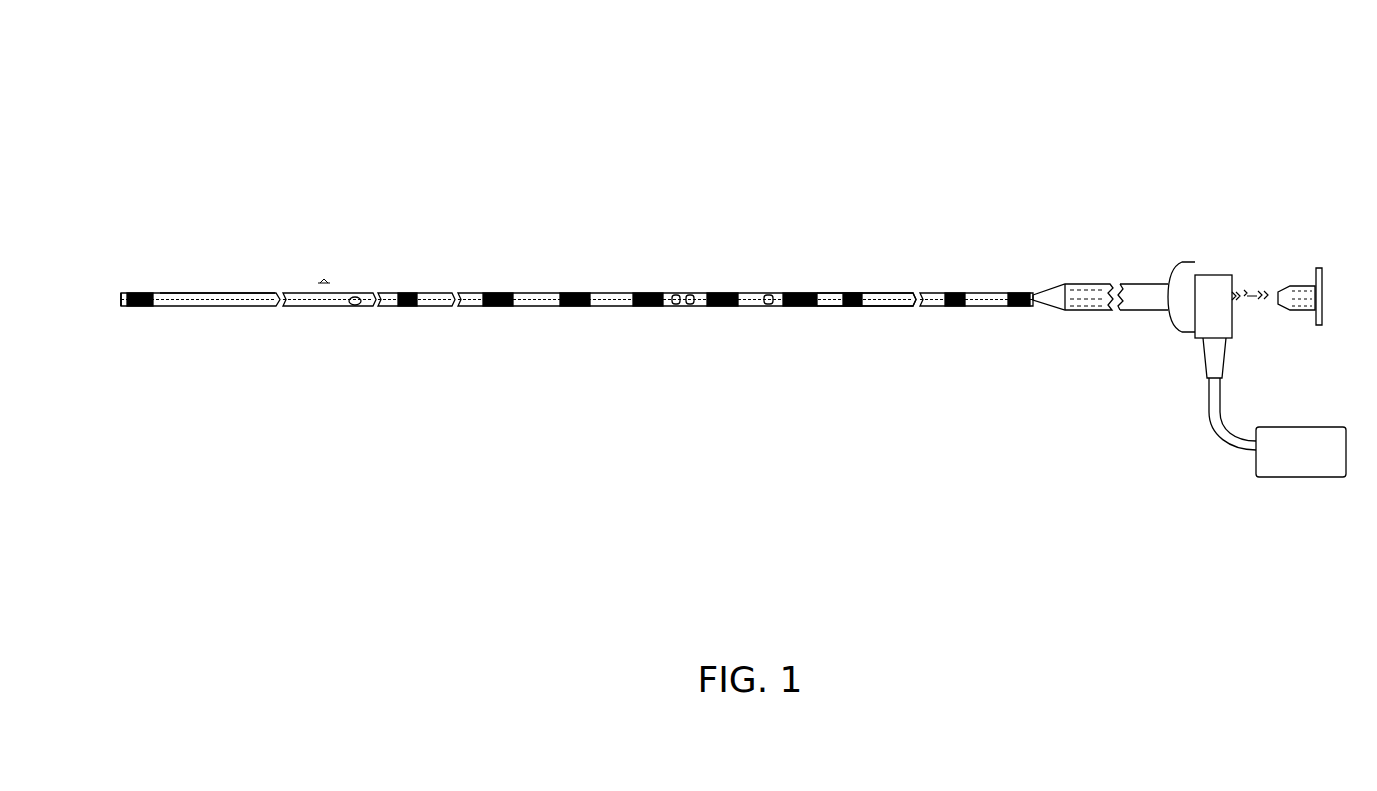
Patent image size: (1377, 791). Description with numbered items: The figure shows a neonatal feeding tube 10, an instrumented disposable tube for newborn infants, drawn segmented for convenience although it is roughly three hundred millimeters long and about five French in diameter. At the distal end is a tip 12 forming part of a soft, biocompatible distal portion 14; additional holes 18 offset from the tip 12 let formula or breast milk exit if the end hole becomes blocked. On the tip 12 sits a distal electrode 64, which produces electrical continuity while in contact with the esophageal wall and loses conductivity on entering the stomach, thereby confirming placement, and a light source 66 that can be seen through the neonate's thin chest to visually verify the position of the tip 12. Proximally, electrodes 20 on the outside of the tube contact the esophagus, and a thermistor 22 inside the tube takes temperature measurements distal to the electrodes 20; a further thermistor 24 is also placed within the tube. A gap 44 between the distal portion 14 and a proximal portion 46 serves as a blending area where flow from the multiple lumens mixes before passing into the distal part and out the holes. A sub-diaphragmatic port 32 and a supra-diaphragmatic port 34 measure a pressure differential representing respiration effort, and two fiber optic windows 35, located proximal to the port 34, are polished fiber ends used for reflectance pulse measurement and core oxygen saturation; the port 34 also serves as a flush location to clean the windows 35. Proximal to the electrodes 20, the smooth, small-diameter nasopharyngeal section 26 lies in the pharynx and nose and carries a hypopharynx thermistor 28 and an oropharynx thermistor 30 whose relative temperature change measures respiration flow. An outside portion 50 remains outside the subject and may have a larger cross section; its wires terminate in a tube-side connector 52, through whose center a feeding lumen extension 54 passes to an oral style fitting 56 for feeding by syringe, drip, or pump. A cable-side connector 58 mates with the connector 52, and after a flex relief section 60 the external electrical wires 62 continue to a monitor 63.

The neonatal feeding tube 10 is at (1147, 141).
The tip 12 is at (121, 298).
The distal portion 14 is at (125, 352).
The additional holes 18 is at (190, 300).
The electrodes 20 is at (783, 293).
The thermistor 22 is at (408, 293).
The thermistor 24 is at (856, 306).
The nasopharyngeal section 26 is at (1030, 256).
The hypopharynx thermistor 28 is at (955, 306).
The oropharynx thermistor 30 is at (1020, 306).
The sub-diaphragmatic port 32 is at (357, 305).
The supra-diaphragmatic port 34 is at (768, 306).
The fiber optic windows 35 is at (690, 306).
The gap 44 is at (326, 280).
The proximal portion 46 is at (330, 416).
The outside portion 50 is at (1168, 256).
The tube-side connector 52 is at (1186, 262).
The feeding lumen extension 54 is at (1247, 292).
The oral style fitting 56 is at (1302, 284).
The cable-side connector 58 is at (1216, 275).
The flex relief section 60 is at (1205, 352).
The external electrical wires 62 is at (1218, 437).
The monitor 63 is at (1286, 478).
The distal electrode 64 is at (132, 293).
The light source 66 is at (124, 307).